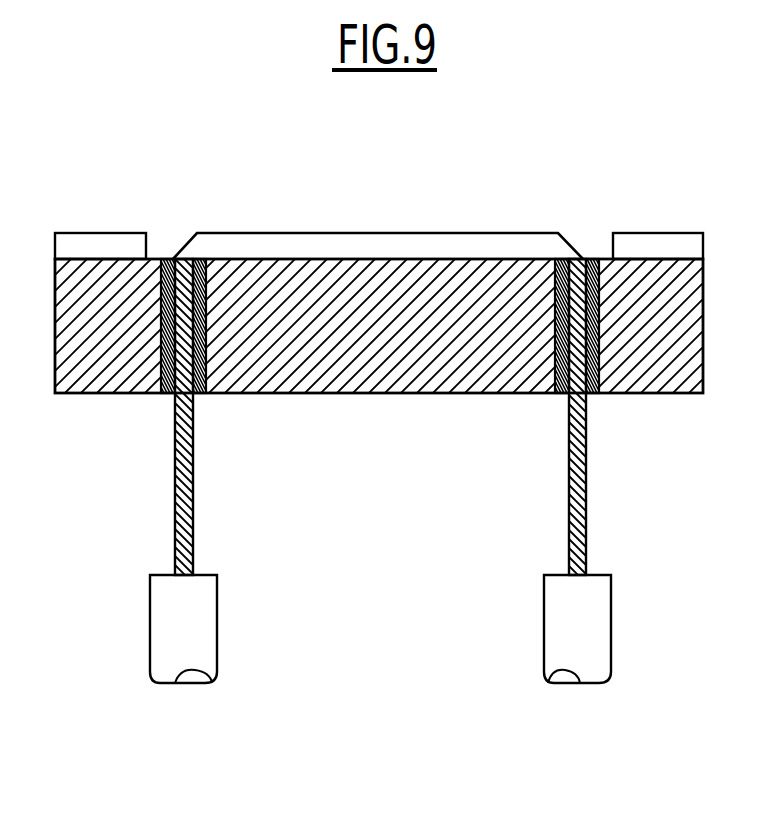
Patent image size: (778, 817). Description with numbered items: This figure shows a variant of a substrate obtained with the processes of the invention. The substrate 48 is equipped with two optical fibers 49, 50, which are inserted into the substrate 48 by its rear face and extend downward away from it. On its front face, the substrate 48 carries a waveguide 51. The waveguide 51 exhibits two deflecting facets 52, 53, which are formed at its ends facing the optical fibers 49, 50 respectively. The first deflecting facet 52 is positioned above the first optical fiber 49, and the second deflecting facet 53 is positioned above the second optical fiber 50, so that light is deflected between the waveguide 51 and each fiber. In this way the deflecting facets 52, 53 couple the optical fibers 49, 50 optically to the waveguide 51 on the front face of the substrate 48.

The substrate 48 is at (388, 340).
The optical fiber 49 is at (192, 497).
The optical fiber 50 is at (568, 495).
The waveguide 51 is at (373, 247).
The deflecting facet 52 is at (186, 247).
The deflecting facet 53 is at (577, 247).